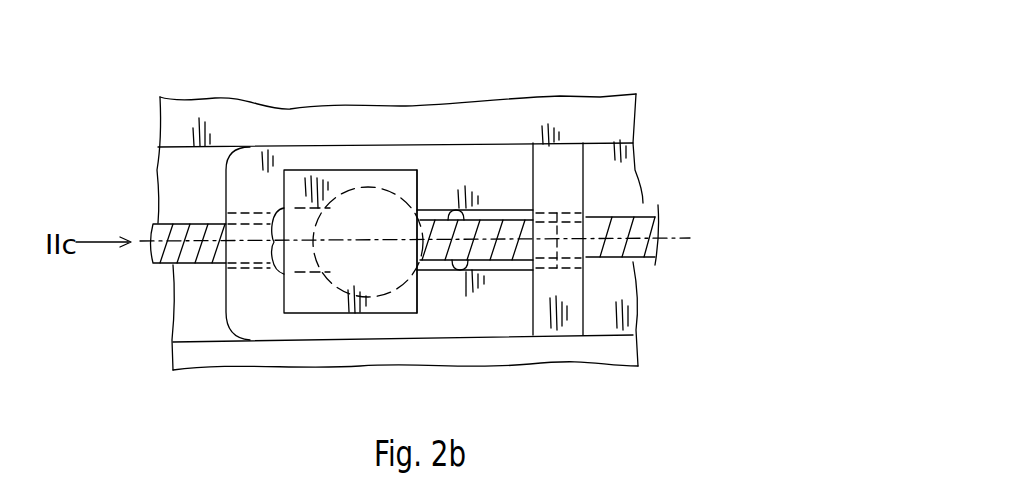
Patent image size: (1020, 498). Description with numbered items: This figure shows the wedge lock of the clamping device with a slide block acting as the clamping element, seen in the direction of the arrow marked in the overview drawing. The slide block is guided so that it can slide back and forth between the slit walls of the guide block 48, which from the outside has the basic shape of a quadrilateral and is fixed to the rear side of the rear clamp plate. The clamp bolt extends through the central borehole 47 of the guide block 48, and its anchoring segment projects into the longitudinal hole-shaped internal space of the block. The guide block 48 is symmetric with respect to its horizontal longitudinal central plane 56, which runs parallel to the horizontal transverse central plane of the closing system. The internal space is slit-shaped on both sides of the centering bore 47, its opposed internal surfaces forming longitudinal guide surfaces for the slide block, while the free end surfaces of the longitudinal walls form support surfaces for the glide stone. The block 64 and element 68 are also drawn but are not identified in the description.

The central borehole 47 is at (386, 187).
The guide block 48 is at (516, 187).
The longitudinal central plane 56 is at (673, 237).
The block 64 is at (338, 170).
The side face 68 is at (419, 185).